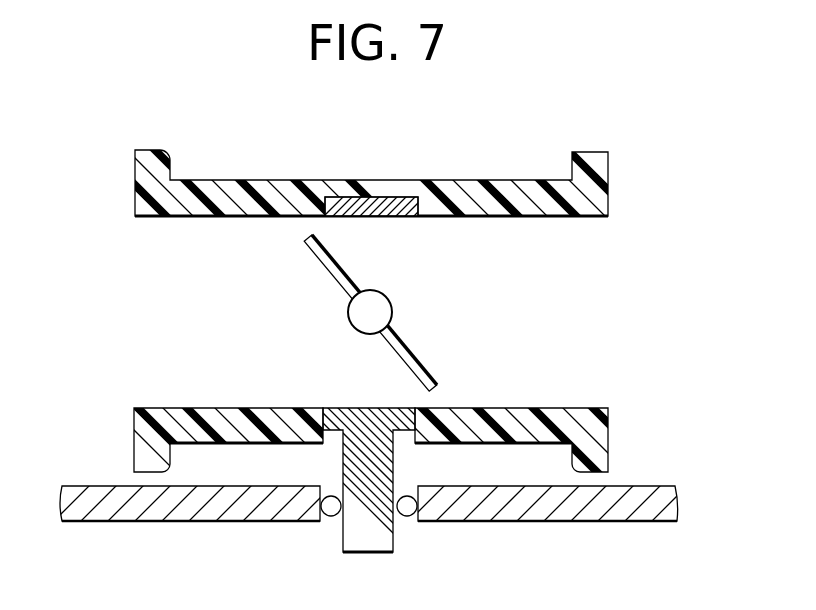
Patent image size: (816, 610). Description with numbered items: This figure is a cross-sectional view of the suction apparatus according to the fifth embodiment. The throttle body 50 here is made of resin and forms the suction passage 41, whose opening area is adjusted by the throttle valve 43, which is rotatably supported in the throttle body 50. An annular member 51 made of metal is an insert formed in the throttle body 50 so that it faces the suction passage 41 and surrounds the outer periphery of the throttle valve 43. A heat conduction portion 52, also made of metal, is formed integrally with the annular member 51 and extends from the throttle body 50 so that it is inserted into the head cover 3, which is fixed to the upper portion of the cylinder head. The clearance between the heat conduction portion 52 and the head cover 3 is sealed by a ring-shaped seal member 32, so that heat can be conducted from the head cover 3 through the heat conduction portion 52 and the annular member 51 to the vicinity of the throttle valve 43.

The head cover 3 is at (530, 520).
The seal member 32 is at (405, 518).
The suction passage 41 is at (203, 230).
The throttle valve 43 is at (308, 238).
The throttle body 50 is at (502, 192).
The annular member 51 is at (387, 200).
The heat conduction portion 52 is at (343, 530).